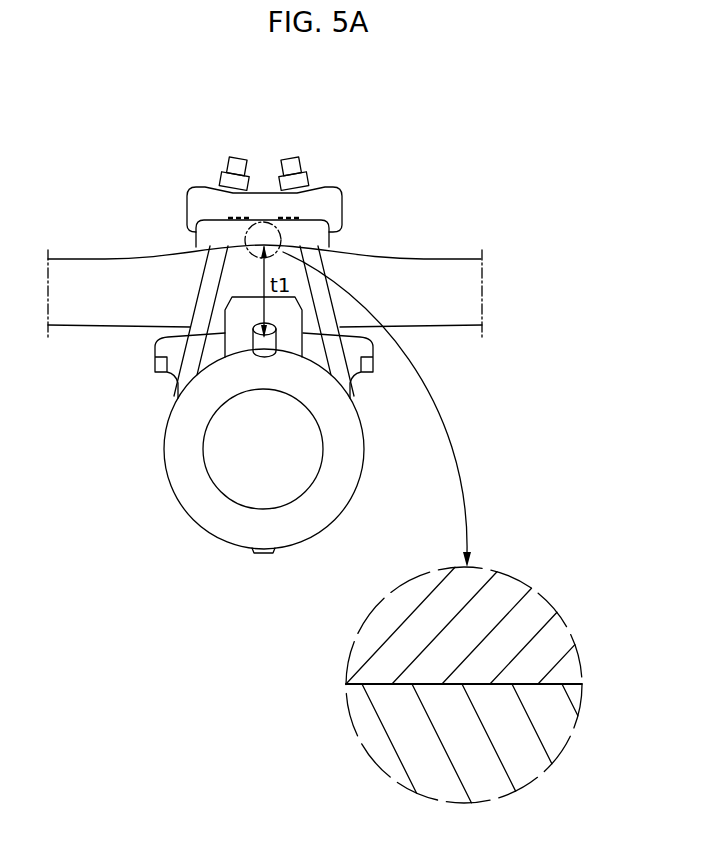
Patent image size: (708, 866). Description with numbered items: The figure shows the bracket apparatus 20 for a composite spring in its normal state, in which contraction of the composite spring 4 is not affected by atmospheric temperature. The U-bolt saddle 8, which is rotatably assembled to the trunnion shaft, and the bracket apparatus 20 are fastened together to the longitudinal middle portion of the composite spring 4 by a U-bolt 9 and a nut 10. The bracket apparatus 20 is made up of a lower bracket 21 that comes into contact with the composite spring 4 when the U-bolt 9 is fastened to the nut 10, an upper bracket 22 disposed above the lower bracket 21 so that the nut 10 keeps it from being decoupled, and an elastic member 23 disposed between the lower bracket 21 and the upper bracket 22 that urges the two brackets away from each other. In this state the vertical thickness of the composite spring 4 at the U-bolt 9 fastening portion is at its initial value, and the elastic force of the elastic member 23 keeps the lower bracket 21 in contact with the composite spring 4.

The composite spring 4 is at (100, 312).
The U-bolt saddle 8 is at (222, 513).
The U-bolt 9 is at (290, 158).
The nut 10 is at (222, 177).
The bracket apparatus 20 is at (322, 376).
The lower bracket 21 is at (323, 242).
The upper bracket 22 is at (186, 221).
The elastic member 23 is at (230, 217).